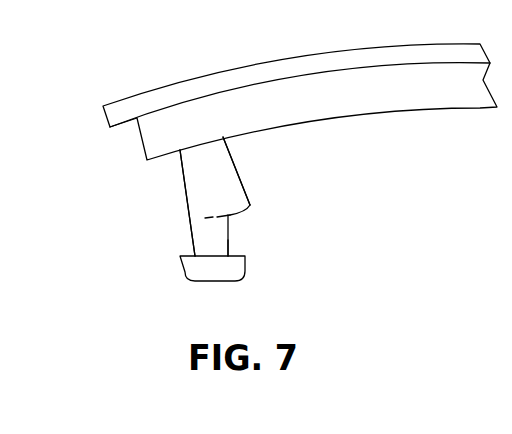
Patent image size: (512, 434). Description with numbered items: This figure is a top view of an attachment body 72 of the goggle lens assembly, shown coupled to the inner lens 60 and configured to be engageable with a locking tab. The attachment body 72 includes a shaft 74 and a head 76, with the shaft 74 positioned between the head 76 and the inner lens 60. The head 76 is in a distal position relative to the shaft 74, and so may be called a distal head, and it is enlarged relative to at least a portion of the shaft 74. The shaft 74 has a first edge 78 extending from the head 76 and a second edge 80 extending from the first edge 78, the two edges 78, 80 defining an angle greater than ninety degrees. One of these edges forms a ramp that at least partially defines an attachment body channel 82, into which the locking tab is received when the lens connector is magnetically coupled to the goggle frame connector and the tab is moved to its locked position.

The inner lens 60 is at (328, 118).
The attachment body 72 is at (176, 238).
The shaft 74 is at (205, 171).
The head 76 is at (259, 278).
The first edge 78 is at (230, 241).
The second edge 80 is at (251, 207).
The attachment body channel 82 is at (247, 219).